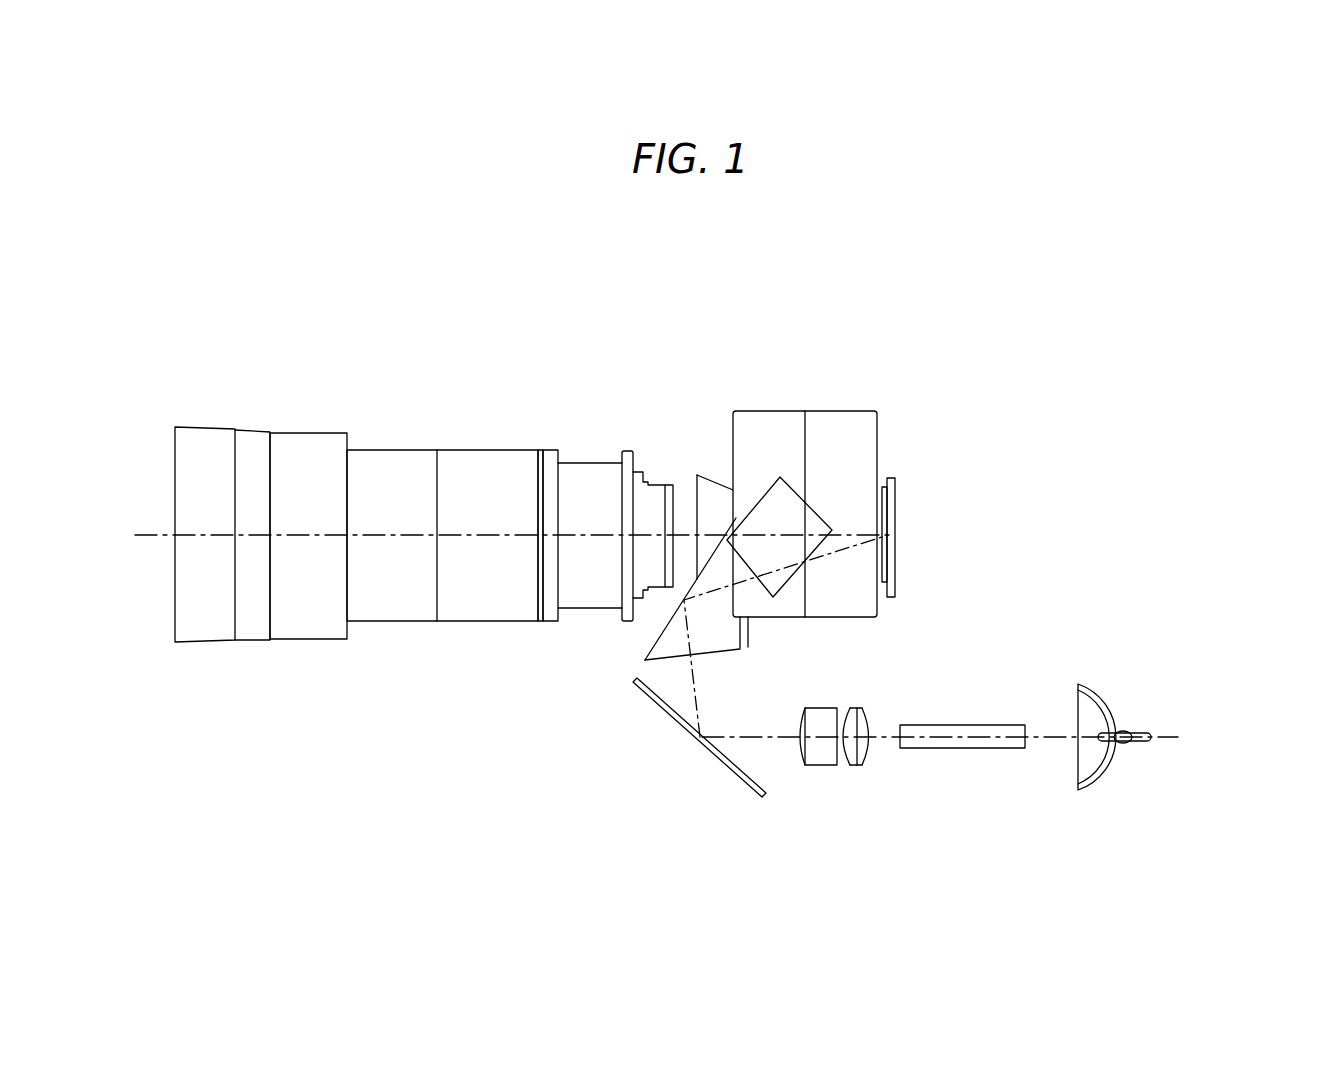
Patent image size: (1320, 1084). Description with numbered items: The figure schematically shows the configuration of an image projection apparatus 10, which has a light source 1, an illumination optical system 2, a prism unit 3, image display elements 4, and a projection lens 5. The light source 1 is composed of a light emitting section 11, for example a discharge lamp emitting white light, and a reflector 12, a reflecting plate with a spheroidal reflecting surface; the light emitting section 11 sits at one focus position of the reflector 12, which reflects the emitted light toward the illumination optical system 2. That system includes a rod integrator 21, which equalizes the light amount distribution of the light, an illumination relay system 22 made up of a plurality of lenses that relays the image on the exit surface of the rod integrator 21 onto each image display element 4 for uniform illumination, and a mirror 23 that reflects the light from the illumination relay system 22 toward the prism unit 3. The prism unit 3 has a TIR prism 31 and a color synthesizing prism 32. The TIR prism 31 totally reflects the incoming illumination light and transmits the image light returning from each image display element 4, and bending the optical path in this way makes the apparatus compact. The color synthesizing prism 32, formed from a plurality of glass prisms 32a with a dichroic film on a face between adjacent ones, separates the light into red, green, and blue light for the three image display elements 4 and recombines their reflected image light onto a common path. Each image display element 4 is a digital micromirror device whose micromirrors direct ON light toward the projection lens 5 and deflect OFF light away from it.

The image projection apparatus 10 is at (1132, 290).
The light source 1 is at (1132, 665).
The light emitting section 11 is at (1120, 735).
The reflector 12 is at (1120, 772).
The illumination optical system 2 is at (605, 773).
The rod integrator 21 is at (962, 750).
The illumination relay system 22 is at (877, 775).
The mirror 23 is at (727, 770).
The prism unit 3 is at (712, 398).
The TIR prism 31 is at (653, 637).
The color synthesizing prism 32 is at (825, 398).
The glass prism 32a is at (768, 602).
The image display element 4 is at (806, 528).
The projection lens 5 is at (398, 449).